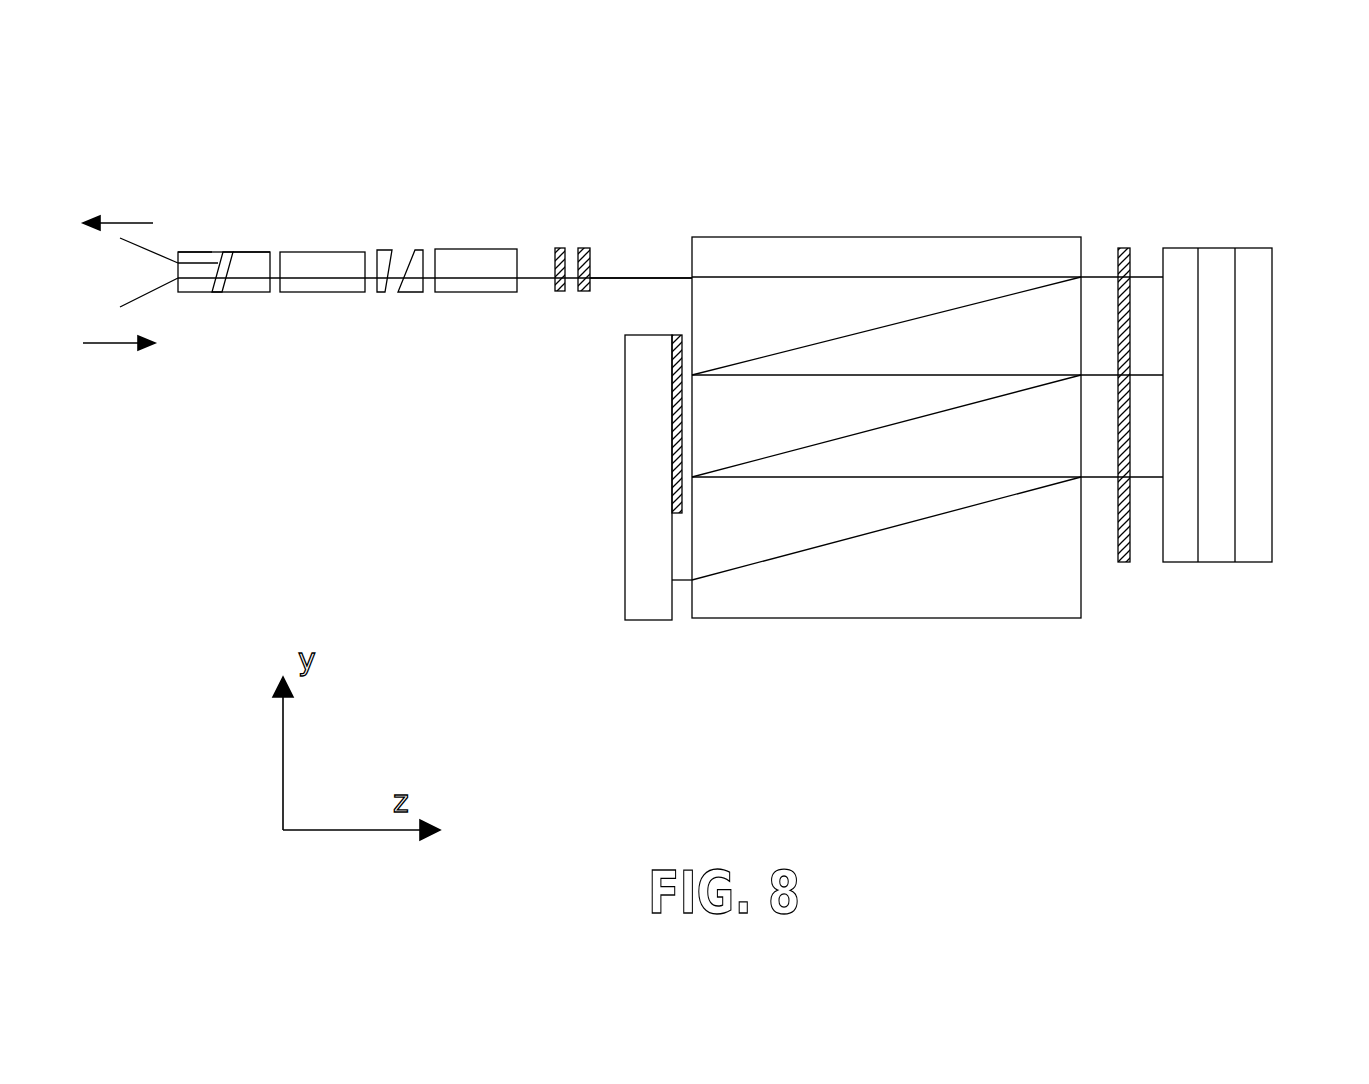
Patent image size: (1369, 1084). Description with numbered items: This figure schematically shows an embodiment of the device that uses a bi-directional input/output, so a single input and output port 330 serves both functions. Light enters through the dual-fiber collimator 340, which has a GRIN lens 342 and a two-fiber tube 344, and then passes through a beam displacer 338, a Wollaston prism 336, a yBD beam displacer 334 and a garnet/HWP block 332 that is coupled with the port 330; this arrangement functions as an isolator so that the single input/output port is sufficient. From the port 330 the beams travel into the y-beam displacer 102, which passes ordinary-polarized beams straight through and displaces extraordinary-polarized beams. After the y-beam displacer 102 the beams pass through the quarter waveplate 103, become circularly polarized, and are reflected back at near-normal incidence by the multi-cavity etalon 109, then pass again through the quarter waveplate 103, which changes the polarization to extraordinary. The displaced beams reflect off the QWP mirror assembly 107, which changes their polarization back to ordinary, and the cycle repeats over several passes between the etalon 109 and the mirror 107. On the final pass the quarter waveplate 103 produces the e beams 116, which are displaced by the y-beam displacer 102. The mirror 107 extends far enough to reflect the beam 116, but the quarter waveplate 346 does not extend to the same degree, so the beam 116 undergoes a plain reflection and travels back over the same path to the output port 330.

The dual-fiber collimator 340 is at (252, 235).
The two-fiber tube 344 is at (197, 293).
The GRIN lens 342 is at (250, 293).
The beam displacer 338 is at (333, 205).
The Wollaston prism 336 is at (403, 242).
The yBD beam displacer 334 is at (508, 243).
The garnet/HWP block 332 is at (573, 237).
The input and output port 330 is at (683, 276).
The y-beam displacer 102 is at (1002, 233).
The e beams 116 is at (818, 548).
The quarter waveplate 346 is at (677, 333).
The QWP mirror assembly 107 is at (633, 492).
The quarter waveplate 103 is at (1125, 565).
The multi-cavity etalon 109 is at (1260, 247).